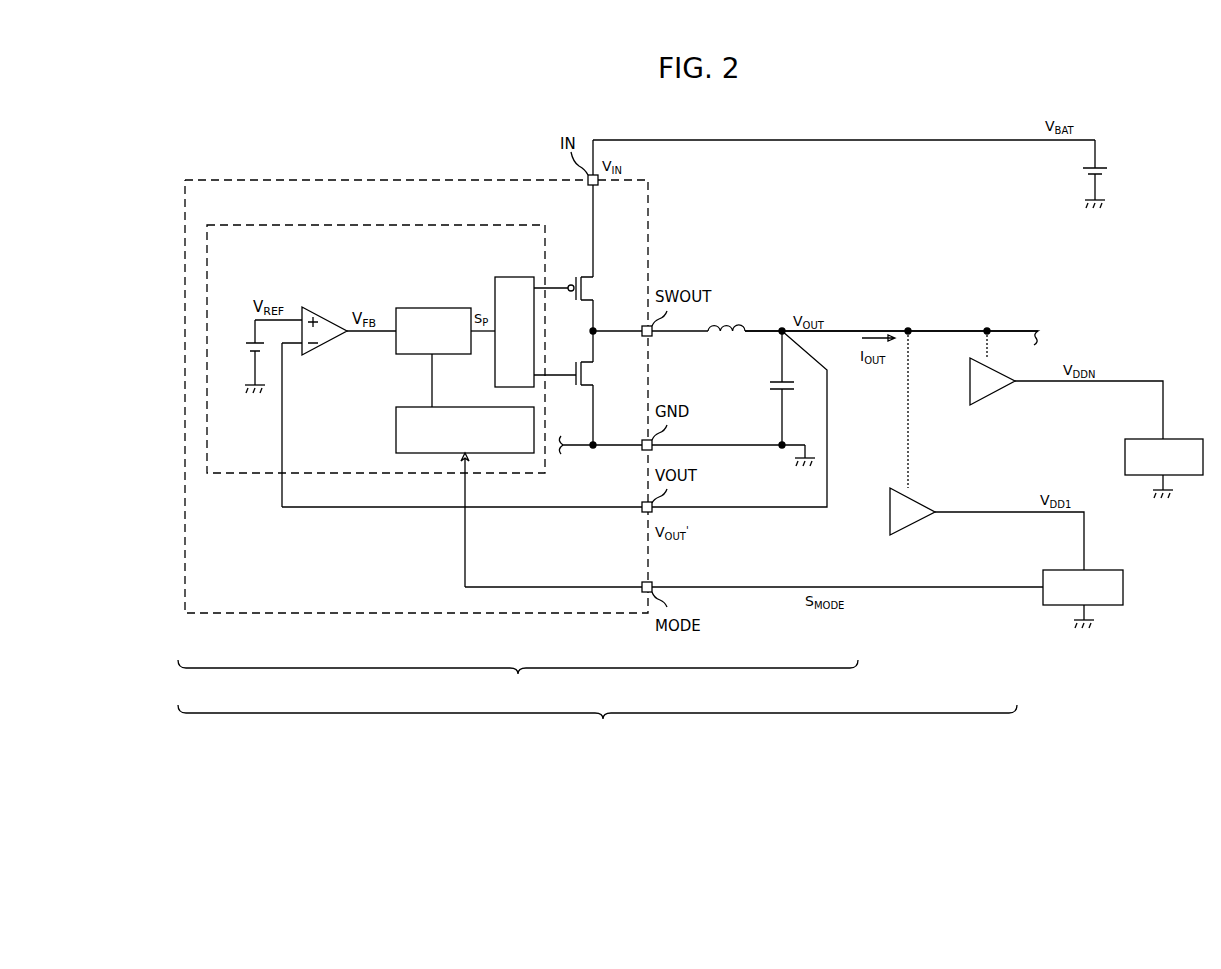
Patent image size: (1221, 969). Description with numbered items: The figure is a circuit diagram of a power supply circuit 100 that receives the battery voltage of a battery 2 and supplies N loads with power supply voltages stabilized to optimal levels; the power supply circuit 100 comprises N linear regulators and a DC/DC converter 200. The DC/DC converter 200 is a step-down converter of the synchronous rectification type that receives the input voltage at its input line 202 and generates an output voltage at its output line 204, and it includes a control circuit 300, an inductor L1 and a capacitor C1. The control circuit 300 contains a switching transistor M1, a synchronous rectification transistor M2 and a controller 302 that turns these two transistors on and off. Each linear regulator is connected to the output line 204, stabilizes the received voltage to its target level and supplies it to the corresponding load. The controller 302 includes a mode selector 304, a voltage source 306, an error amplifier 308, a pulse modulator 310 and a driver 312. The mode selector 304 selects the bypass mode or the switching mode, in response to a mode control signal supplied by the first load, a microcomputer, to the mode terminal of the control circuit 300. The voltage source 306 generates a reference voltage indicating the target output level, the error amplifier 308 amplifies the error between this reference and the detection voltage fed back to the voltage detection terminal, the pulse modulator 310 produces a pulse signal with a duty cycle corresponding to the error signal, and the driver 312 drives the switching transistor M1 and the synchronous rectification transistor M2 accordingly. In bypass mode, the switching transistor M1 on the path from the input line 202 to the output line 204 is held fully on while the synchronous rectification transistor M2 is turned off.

The power supply circuit 100 is at (597, 725).
The DC/DC converter 200 is at (518, 680).
The input line 202 is at (778, 139).
The output line 204 is at (843, 330).
The control circuit 300 is at (384, 180).
The controller 302 is at (408, 225).
The mode selector 304 is at (396, 428).
The voltage source 306 is at (236, 356).
The error amplifier 308 is at (324, 316).
The pulse modulator 310 is at (426, 308).
The driver 312 is at (512, 277).
The battery 2 is at (1112, 175).
The switching transistor M1 is at (583, 288).
The synchronous rectification transistor M2 is at (583, 373).
The inductor L1 is at (724, 342).
The capacitor C1 is at (768, 386).